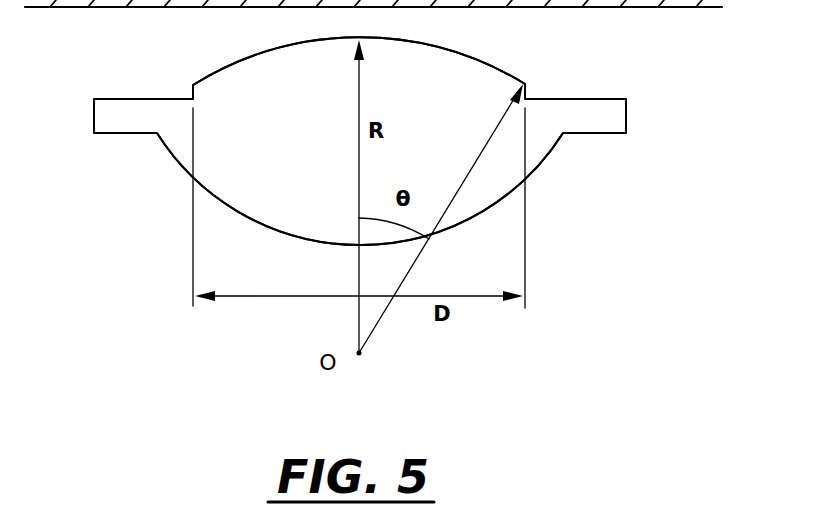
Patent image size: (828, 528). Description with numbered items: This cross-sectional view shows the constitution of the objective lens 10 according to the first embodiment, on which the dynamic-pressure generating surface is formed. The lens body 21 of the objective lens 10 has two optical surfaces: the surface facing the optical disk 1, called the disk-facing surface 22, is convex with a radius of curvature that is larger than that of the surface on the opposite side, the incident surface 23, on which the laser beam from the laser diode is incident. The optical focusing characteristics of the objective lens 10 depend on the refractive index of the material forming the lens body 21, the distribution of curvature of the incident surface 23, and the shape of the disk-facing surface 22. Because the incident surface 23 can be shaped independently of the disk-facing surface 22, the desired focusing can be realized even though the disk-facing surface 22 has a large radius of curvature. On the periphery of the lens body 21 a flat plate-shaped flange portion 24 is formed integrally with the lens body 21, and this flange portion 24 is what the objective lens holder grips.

The optical disk 1 is at (699, 7).
The objective lens 10 is at (592, 178).
The lens body 21 is at (298, 190).
The disk-facing surface 22 is at (220, 58).
The incident surface 23 is at (170, 172).
The flange portion 24 is at (612, 118).